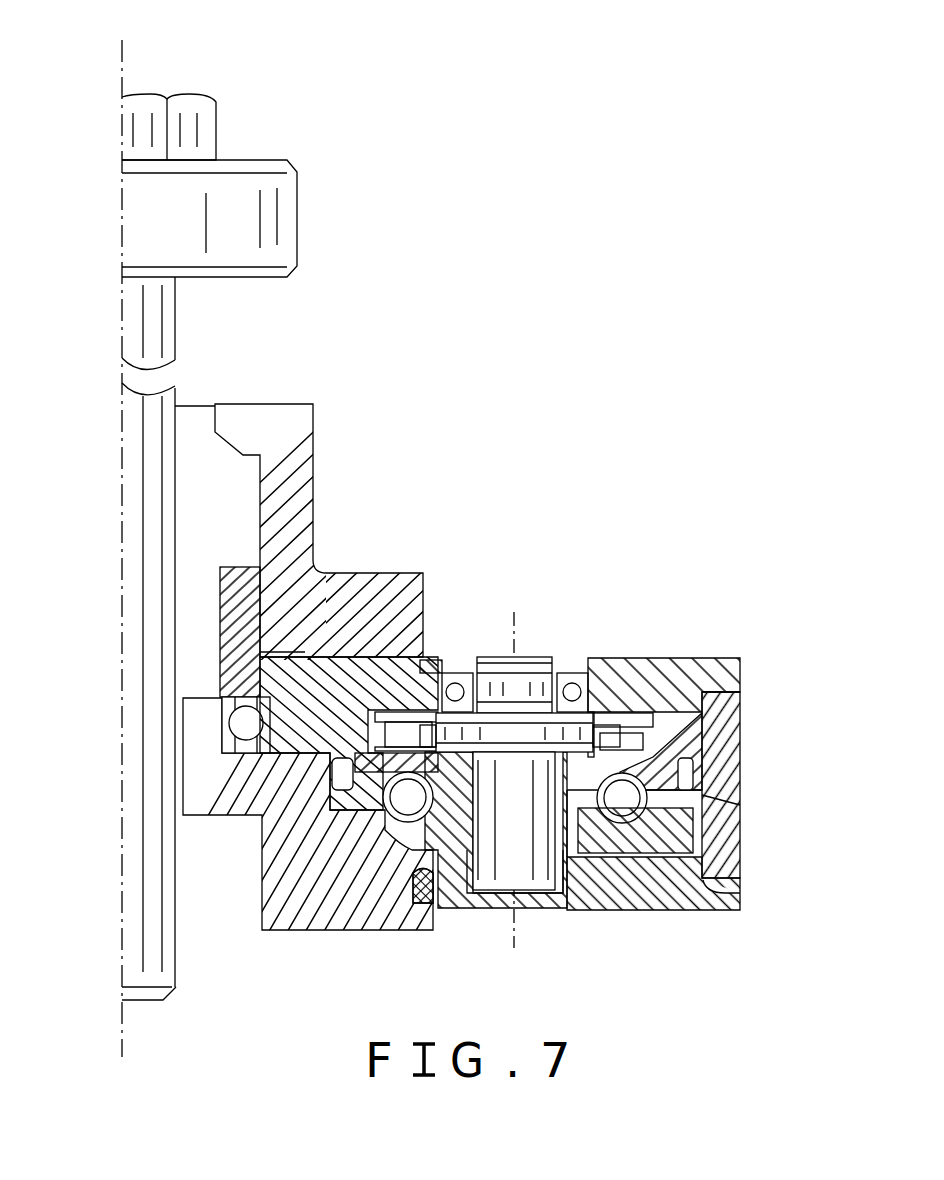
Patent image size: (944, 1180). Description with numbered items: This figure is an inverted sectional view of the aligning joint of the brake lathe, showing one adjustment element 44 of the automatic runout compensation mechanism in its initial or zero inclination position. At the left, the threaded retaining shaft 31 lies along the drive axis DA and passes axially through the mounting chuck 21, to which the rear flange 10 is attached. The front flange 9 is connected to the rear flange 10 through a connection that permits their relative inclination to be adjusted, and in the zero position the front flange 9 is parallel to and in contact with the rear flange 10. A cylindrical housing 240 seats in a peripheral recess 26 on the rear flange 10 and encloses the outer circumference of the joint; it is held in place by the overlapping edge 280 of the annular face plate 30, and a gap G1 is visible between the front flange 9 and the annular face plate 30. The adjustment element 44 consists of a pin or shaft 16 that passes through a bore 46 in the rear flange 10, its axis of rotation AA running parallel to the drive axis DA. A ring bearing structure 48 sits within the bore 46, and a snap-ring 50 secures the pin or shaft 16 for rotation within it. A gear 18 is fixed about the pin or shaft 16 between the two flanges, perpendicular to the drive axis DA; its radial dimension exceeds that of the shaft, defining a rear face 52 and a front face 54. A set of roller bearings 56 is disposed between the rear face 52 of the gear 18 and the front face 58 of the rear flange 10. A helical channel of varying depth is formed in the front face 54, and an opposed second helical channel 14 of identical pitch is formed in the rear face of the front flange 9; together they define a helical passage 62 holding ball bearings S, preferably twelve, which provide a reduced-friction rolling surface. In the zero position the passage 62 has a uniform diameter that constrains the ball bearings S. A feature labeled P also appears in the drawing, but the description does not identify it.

The drive axis DA is at (123, 554).
The longitudinal axis of rotation AA is at (516, 766).
The threaded retaining shaft 31 is at (138, 302).
The mounting chuck 21 is at (313, 427).
The front flange 9 is at (290, 888).
The second helical channel 14 is at (405, 830).
The rear flange 10 is at (332, 697).
The bore 46 is at (425, 660).
The roller bearings 56 is at (403, 740).
The front face 58 is at (690, 708).
The snap-ring 50 is at (557, 657).
The ring bearing structure 48 is at (455, 683).
The adjustment element 44 is at (590, 600).
The pin or shaft 16 is at (525, 870).
The front face 54 is at (560, 858).
The peripheral recess 26 is at (737, 660).
The gear 18 is at (648, 800).
The rear face 52 is at (682, 758).
The pressure chamber P is at (740, 697).
The helical passage 62 is at (395, 807).
The cylindrical housing 240 is at (724, 800).
The gap G1 is at (683, 852).
The annular face plate 30 is at (665, 885).
The overlapping edge 280 is at (722, 886).
The ball bearings S is at (388, 835).